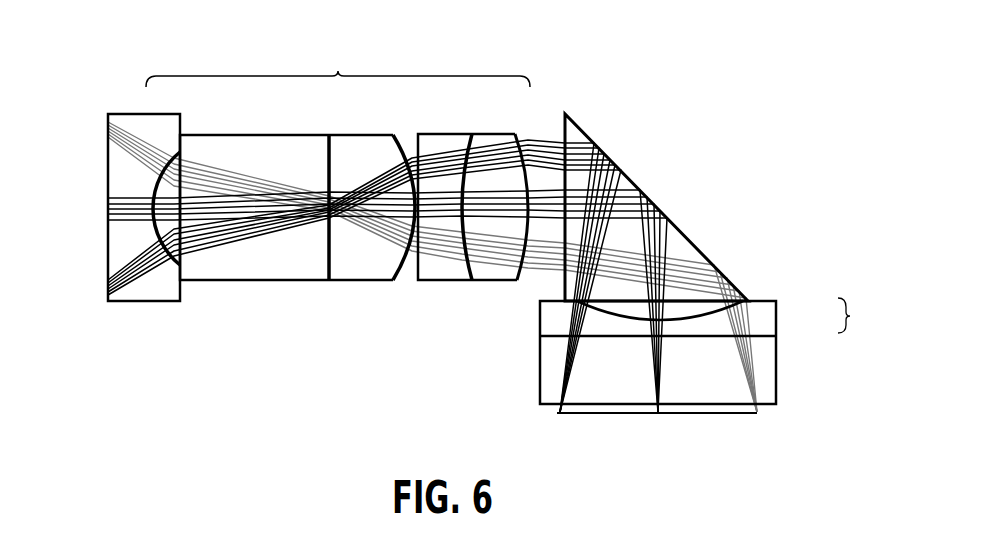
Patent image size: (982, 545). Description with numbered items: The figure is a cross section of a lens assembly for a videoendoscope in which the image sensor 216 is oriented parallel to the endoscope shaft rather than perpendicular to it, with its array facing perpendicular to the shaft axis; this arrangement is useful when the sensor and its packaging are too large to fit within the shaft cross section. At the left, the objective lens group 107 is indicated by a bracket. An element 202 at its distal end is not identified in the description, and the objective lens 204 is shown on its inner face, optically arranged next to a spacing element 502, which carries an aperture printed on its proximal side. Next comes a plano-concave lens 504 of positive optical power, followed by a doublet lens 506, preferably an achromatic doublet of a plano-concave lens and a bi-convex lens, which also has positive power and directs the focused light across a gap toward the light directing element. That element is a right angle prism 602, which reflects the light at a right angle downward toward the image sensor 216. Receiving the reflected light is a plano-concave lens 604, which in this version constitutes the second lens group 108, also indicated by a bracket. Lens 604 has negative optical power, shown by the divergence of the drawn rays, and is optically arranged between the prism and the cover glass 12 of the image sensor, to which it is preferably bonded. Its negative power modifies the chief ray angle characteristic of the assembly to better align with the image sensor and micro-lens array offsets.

The objective lens group 107 is at (338, 68).
The input optical element 202 is at (100, 149).
The objective lens 204 is at (144, 184).
The spacing element 502 is at (246, 135).
The plano-concave lens 504 is at (377, 135).
The doublet lens 506 is at (437, 134).
The right angle prism 602 is at (682, 228).
The plano-concave lens 604 is at (776, 320).
The second lens group 108 is at (858, 315).
The cover glass 12 is at (538, 357).
The image sensor 216 is at (757, 413).